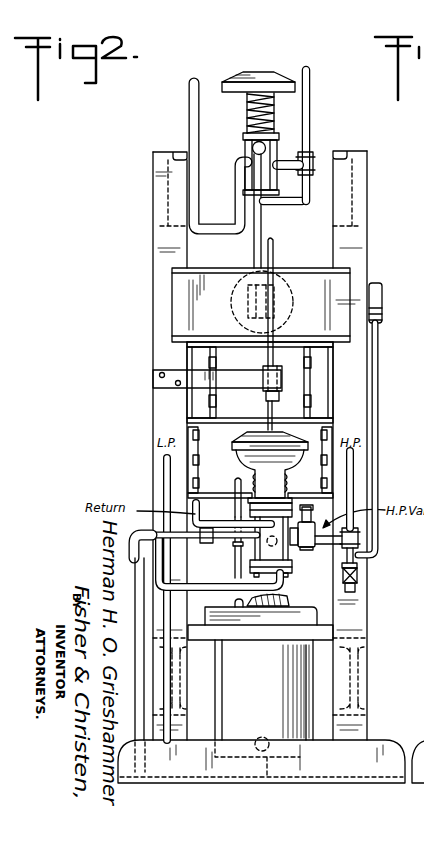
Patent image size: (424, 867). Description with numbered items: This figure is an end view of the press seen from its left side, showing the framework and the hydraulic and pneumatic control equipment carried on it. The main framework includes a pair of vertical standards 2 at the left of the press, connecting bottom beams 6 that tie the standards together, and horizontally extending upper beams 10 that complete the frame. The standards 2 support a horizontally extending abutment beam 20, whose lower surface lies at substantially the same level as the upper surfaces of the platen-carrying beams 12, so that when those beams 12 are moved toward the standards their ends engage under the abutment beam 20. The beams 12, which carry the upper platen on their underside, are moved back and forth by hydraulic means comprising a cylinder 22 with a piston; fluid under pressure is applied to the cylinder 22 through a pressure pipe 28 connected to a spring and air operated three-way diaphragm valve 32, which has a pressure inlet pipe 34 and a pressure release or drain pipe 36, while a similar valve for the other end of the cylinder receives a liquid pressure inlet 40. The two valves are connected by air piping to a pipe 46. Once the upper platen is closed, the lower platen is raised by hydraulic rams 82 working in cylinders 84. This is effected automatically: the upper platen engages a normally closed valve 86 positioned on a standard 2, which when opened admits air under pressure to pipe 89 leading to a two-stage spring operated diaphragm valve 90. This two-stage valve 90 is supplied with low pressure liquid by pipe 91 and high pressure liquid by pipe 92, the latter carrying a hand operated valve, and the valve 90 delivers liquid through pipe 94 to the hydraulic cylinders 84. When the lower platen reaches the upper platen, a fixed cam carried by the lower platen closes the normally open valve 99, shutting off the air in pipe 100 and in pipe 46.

The vertical standards 2 is at (165, 240).
The connecting bottom beams 6 is at (188, 692).
The upper beams 10 is at (358, 166).
The platen-carrying beams 12 is at (207, 362).
The abutment beam 20 is at (182, 297).
The cylinder 22 is at (286, 270).
The pressure pipe 28 is at (256, 253).
The three-way diaphragm valve 32 is at (255, 74).
The pressure inlet pipe 34 is at (283, 206).
The pressure release or drain pipe 36 is at (188, 88).
The liquid pressure inlet 40 is at (310, 106).
The pipe 46 is at (233, 565).
The hydraulic rams 82 is at (280, 598).
The cylinders 84 is at (270, 699).
The valve 86 is at (266, 370).
The pipe 89 is at (267, 402).
The two-stage diaphragm valve 90 is at (239, 462).
The low pressure pipe 91 is at (164, 461).
The high pressure pipe 92 is at (354, 470).
The pipe 94 is at (183, 778).
The normally open valve 99 is at (234, 520).
The pipe 100 is at (236, 480).